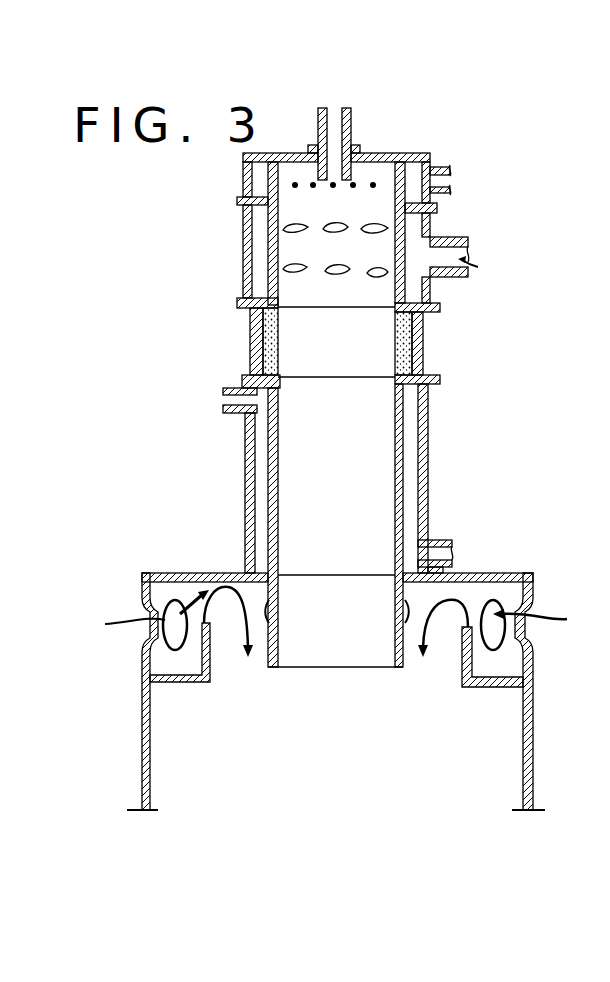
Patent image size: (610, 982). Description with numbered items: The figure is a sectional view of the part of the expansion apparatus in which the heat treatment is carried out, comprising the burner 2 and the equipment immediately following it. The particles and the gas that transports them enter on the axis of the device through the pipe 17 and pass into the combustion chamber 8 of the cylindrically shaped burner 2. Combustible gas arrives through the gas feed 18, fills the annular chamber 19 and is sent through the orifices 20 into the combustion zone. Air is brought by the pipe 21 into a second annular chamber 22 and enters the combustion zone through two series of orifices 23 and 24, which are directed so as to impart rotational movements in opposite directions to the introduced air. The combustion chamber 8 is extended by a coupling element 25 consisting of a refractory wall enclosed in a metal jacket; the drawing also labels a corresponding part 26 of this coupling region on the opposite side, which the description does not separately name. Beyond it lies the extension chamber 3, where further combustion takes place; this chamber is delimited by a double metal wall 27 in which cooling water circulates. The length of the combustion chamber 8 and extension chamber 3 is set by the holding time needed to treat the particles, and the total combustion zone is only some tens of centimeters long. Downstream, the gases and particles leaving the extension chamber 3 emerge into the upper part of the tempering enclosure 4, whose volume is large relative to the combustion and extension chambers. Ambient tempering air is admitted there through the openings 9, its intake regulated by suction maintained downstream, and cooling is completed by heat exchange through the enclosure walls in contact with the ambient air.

The burner 2 is at (440, 149).
The extension chamber 3 is at (322, 451).
The tempering enclosure 4 is at (322, 760).
The combustion chamber 8 is at (362, 299).
The openings 9 is at (526, 632).
The pipe 17 is at (350, 136).
The gas feed 18 is at (446, 179).
The annular chamber 19 is at (261, 180).
The orifices 20 is at (314, 189).
The pipe 21 is at (454, 280).
The annular chamber 22 is at (262, 258).
The orifices 23 is at (297, 230).
The orifices 24 is at (293, 272).
The coupling element 25 is at (433, 353).
The porous wall 26 is at (252, 345).
The double metal wall 27 is at (431, 434).